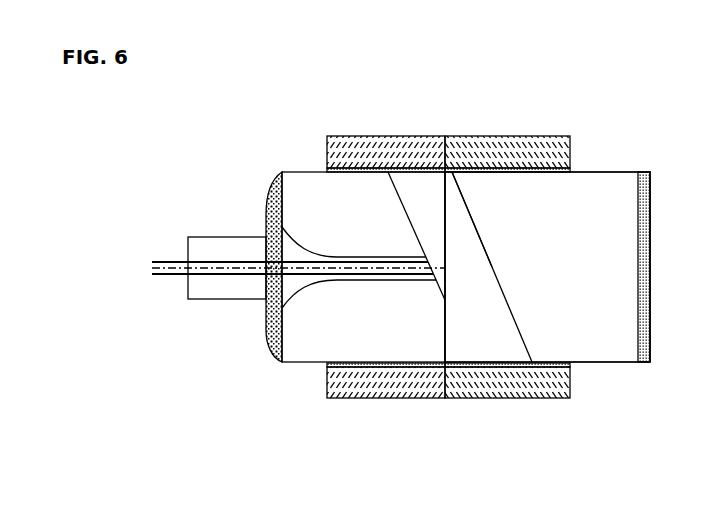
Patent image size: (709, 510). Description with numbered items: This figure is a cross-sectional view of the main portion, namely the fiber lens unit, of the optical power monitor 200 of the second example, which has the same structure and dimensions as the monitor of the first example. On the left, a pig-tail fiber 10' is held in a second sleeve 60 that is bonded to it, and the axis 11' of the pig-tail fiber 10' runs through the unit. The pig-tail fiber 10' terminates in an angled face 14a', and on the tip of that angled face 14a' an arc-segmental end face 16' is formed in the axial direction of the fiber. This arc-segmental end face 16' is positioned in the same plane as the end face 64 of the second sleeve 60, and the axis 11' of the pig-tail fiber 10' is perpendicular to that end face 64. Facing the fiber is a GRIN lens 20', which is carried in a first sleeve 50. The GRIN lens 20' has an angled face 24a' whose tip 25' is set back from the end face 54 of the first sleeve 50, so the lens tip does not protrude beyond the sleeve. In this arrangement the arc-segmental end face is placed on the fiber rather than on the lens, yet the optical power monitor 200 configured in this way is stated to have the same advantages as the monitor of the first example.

The optical power monitor 200 is at (215, 155).
The pig-tail fiber 10' is at (265, 308).
The axis 11' is at (298, 324).
The arc-segmental end face 16' is at (362, 346).
The angled face 14a' is at (433, 199).
The tip 25' is at (532, 233).
The angled face 24a' is at (563, 206).
The GRIN lens 20' is at (555, 304).
The first sleeve 50 is at (563, 398).
The end face 54 is at (463, 400).
The second sleeve 60 is at (333, 400).
The end face 64 is at (443, 370).